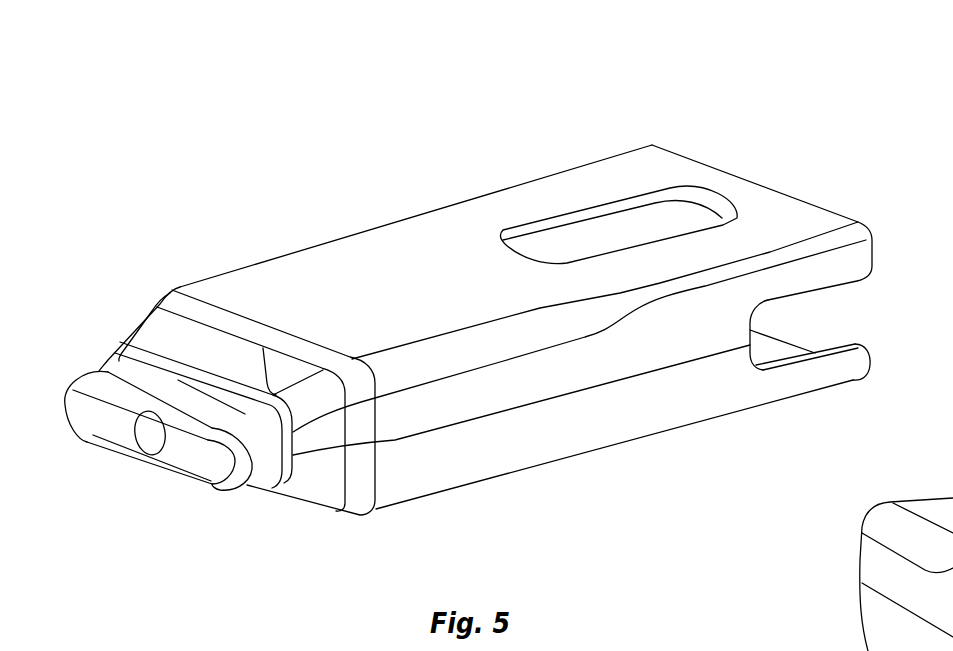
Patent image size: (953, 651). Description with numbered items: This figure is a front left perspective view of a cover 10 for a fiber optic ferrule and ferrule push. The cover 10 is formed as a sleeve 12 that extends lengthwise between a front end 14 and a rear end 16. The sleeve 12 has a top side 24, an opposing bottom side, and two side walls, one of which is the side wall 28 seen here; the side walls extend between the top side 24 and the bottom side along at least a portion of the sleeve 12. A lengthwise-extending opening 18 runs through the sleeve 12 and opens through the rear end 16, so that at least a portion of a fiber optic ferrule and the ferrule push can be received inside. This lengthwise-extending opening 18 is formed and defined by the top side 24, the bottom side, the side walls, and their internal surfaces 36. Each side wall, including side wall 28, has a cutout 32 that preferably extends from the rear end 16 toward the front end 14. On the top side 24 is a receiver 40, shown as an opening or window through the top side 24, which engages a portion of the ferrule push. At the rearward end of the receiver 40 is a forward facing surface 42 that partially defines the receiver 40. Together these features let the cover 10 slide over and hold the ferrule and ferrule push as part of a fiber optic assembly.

The cover 10 is at (506, 287).
The sleeve 12 is at (688, 430).
The front end 14 is at (184, 474).
The rear end 16 is at (872, 364).
The lengthwise-extending opening 18 is at (846, 300).
The top side 24 is at (519, 252).
The side wall 28 is at (561, 437).
The cutout 32 is at (807, 358).
The internal surfaces 36 is at (772, 347).
The receiver 40 is at (626, 228).
The forward facing surface 42 is at (708, 205).